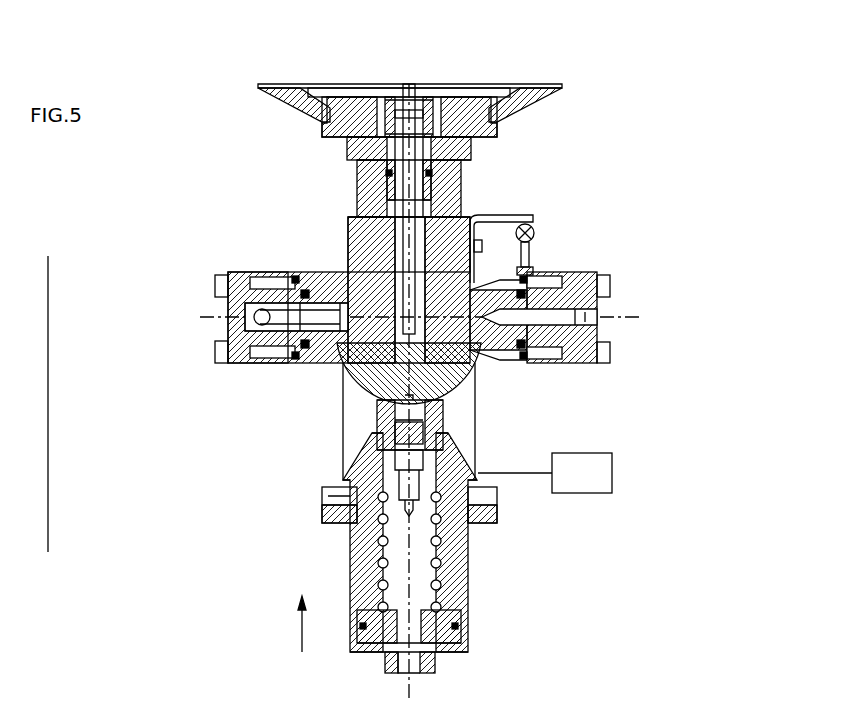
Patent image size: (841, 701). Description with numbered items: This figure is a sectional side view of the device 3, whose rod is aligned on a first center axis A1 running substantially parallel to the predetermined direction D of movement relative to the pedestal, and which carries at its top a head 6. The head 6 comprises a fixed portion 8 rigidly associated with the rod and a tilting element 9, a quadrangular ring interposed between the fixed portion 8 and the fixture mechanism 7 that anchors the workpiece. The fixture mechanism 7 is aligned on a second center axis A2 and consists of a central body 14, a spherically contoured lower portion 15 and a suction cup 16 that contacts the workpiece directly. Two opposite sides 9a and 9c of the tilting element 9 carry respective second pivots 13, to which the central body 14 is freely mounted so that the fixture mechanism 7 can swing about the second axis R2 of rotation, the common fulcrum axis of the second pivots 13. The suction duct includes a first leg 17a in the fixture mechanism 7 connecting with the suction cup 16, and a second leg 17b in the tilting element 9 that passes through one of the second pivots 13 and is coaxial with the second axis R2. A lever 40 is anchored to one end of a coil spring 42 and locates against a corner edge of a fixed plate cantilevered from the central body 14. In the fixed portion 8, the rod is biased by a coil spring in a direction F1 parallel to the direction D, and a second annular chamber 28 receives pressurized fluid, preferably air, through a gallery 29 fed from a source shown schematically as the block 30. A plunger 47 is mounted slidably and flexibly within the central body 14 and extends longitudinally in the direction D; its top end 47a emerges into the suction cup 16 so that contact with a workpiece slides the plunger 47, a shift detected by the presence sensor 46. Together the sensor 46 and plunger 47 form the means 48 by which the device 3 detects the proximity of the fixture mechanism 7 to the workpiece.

The suction cup 16 is at (285, 78).
The second center axis A2 is at (406, 100).
The top end of the plunger 47a is at (418, 95).
The plunger 47 is at (458, 168).
The coil spring 42 is at (474, 212).
The fixture mechanism 7 is at (555, 193).
The lever 40 is at (536, 250).
The side of the tilting element 9a is at (578, 262).
The head 6 is at (262, 172).
The first leg of the suction duct 17a is at (342, 217).
The second leg of the suction duct 17b is at (300, 268).
The central body 14 is at (346, 255).
The tilting element 9 is at (245, 268).
The side of the tilting element 9c is at (258, 270).
The second axis of rotation R2 is at (222, 317).
The presence sensor 46 is at (600, 333).
The second pivots 13 is at (310, 360).
The spherically contoured lower portion 15 is at (480, 360).
The means to detect proximity 48 is at (382, 405).
The gallery 29 is at (470, 556).
The fixed portion 8 is at (472, 598).
The second annular chamber 28 is at (466, 626).
The device 3 is at (518, 648).
The source of pressurized fluid 30 is at (595, 484).
The first center axis A1 is at (378, 556).
The predetermined direction D is at (60, 404).
The biasing direction F1 is at (279, 624).